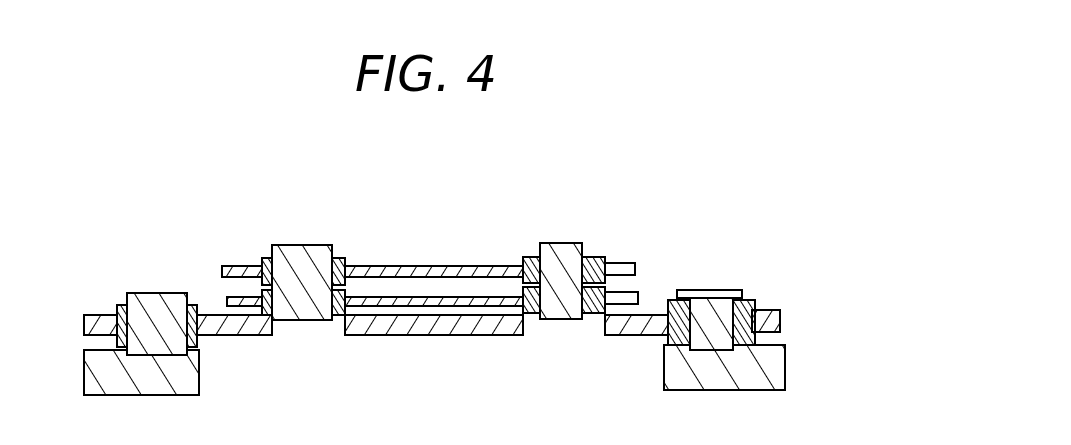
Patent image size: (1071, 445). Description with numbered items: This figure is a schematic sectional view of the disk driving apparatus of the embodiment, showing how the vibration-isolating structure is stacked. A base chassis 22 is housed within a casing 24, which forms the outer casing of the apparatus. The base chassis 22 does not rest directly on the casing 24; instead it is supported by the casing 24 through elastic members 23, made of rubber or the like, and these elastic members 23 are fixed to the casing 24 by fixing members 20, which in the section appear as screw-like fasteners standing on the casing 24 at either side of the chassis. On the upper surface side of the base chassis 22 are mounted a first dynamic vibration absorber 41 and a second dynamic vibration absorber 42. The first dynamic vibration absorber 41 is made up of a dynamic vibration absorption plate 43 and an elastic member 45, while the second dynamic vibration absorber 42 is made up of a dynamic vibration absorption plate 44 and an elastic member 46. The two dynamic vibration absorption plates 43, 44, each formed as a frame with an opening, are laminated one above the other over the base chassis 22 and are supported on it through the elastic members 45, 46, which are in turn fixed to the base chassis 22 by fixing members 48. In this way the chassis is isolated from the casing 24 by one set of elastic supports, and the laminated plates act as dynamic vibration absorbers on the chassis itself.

The fixing member 20 is at (718, 290).
The base chassis 22 is at (418, 336).
The elastic member 23 is at (753, 308).
The casing 24 is at (786, 358).
The first dynamic vibration absorber 41 is at (247, 316).
The second dynamic vibration absorber 42 is at (256, 259).
The dynamic vibration absorption plate 43 is at (638, 293).
The dynamic vibration absorption plate 44 is at (624, 265).
The elastic member 45 is at (533, 313).
The elastic member 46 is at (523, 258).
The fixing member 48 is at (570, 243).